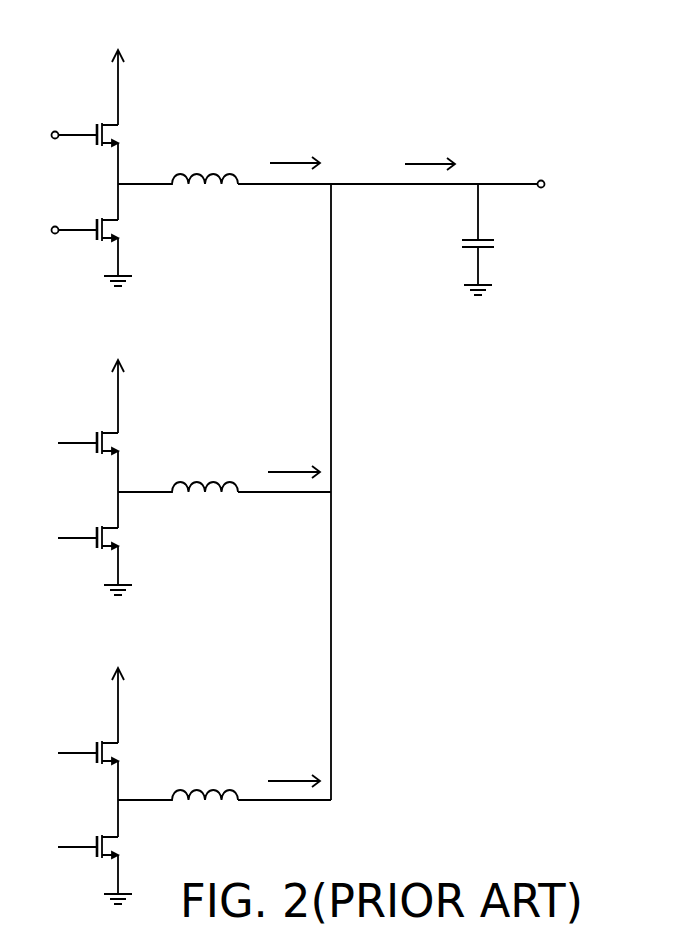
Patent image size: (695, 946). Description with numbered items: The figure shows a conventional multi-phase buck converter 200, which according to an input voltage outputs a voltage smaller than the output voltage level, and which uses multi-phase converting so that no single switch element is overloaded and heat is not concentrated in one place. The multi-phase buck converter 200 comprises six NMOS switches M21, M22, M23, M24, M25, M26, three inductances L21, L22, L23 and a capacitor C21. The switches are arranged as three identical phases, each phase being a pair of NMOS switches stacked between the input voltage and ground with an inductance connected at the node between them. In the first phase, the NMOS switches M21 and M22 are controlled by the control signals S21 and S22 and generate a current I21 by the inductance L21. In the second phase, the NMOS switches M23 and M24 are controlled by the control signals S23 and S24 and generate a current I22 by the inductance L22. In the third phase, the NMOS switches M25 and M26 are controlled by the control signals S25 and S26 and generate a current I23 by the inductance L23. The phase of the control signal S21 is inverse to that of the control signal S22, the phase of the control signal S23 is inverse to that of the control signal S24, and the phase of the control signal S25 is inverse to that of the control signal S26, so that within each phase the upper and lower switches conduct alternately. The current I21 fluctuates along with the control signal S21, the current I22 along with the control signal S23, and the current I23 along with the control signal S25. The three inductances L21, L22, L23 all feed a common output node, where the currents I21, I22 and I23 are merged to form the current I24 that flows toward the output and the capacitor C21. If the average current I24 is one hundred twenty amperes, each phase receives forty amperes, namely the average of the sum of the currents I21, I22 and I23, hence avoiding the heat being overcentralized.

The multi-phase buck converter 200 is at (522, 857).
The NMOS switch M21 is at (128, 135).
The NMOS switch M22 is at (128, 230).
The NMOS switch M23 is at (128, 443).
The NMOS switch M24 is at (128, 538).
The NMOS switch M25 is at (128, 753).
The NMOS switch M26 is at (128, 847).
The control signal S21 is at (53, 136).
The control signal S22 is at (53, 231).
The control signal S23 is at (53, 445).
The control signal S24 is at (53, 539).
The control signal S25 is at (53, 755).
The control signal S26 is at (53, 848).
The inductance L21 is at (178, 166).
The inductance L22 is at (178, 474).
The inductance L23 is at (178, 782).
The capacitor C21 is at (498, 239).
The current I21 is at (295, 155).
The current I22 is at (294, 463).
The current I23 is at (294, 772).
The average current I24 is at (430, 155).